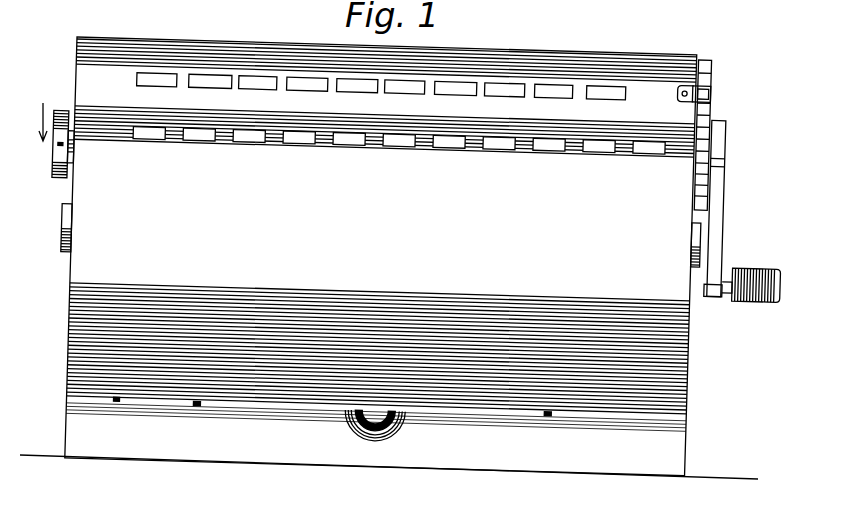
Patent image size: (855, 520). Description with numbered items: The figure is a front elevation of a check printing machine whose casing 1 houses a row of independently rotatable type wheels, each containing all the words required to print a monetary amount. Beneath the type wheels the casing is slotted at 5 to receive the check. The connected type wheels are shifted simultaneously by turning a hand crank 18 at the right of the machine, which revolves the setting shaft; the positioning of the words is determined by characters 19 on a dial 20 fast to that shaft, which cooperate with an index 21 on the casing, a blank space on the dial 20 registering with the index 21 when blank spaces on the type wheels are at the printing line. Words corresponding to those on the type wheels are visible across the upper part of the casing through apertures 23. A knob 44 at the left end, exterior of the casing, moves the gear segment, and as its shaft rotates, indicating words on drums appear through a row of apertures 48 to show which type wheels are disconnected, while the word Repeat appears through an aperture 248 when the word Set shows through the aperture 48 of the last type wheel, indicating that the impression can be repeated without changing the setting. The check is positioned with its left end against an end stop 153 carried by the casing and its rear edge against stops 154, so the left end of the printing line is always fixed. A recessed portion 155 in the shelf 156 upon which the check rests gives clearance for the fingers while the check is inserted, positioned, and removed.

The casing 1 is at (376, 256).
The slot 5 is at (165, 404).
The hand crank 18 is at (709, 248).
The characters 19 is at (710, 110).
The dial 20 is at (710, 163).
The index 21 is at (712, 86).
The apertures 23 is at (217, 72).
The knob 44 is at (56, 178).
The apertures 48 is at (160, 139).
The end stop 153 is at (117, 400).
The stops 154 is at (197, 405).
The recessed portion 155 is at (394, 433).
The shelf 156 is at (658, 424).
The aperture 248 is at (649, 155).